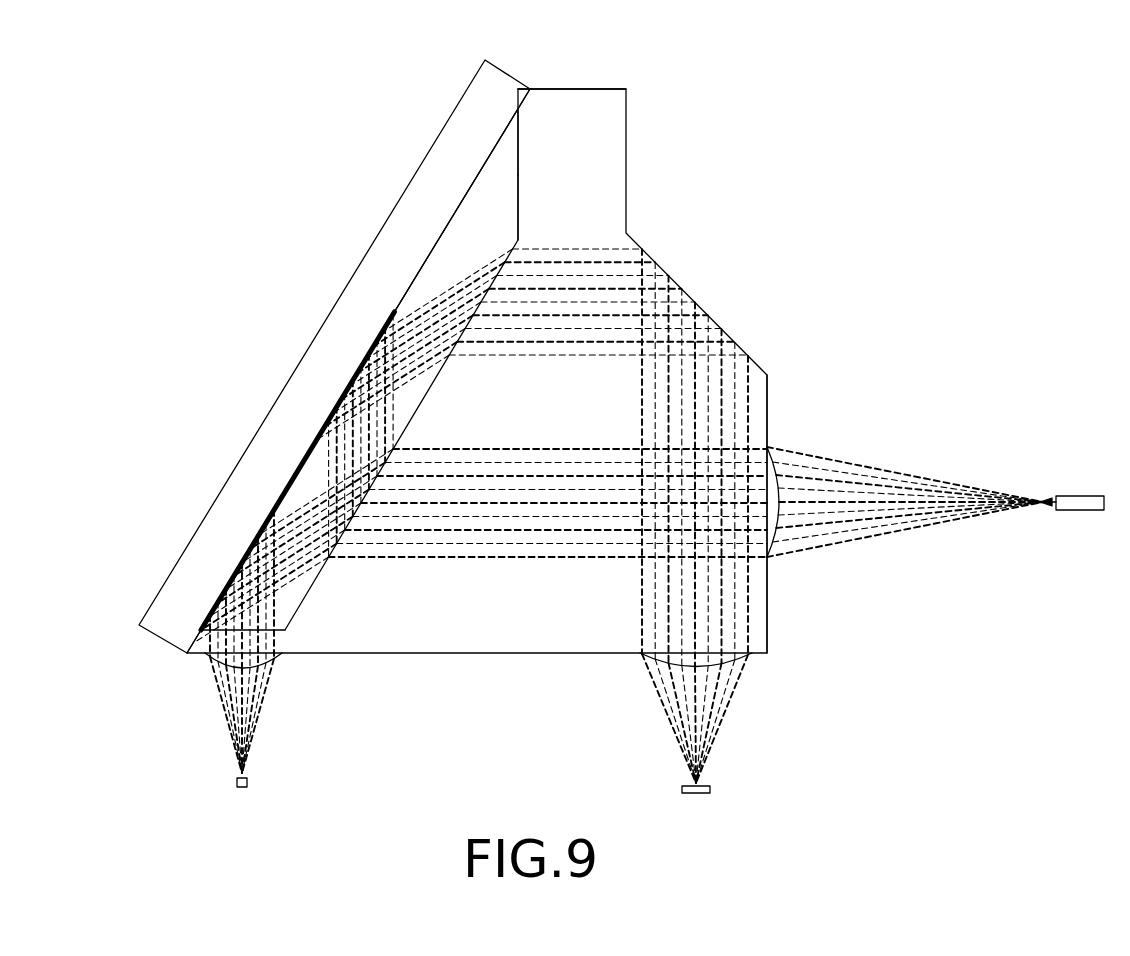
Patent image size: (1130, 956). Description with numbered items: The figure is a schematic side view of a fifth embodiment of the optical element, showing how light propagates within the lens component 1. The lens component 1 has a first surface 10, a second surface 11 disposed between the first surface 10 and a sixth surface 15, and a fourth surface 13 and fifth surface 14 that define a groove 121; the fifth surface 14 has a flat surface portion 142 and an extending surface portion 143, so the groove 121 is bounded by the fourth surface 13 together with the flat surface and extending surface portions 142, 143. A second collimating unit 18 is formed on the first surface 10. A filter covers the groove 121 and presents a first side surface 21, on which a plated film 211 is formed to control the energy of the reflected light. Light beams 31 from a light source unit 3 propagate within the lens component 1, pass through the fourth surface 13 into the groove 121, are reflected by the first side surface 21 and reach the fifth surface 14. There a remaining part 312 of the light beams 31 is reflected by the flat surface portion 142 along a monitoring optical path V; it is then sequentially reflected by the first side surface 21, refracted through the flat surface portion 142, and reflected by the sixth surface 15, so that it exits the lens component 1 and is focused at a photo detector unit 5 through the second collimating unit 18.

The lens component 1 is at (593, 74).
The first surface 10 is at (480, 655).
The second surface 11 is at (768, 603).
The fourth surface 13 is at (260, 630).
The fifth surface 14 is at (517, 240).
The flat surface portion 142 is at (491, 203).
The extending surface portion 143 is at (518, 172).
The sixth surface 15 is at (760, 375).
The second collimating unit 18 is at (738, 658).
The groove 121 is at (438, 270).
The first side surface 21 is at (303, 482).
The plated film 211 is at (238, 580).
The light source unit 3 is at (248, 783).
The light beams 31 is at (220, 700).
The remaining part of the light beams 312 is at (347, 437).
The photo detector unit 5 is at (703, 793).
The monitoring optical path V is at (300, 440).